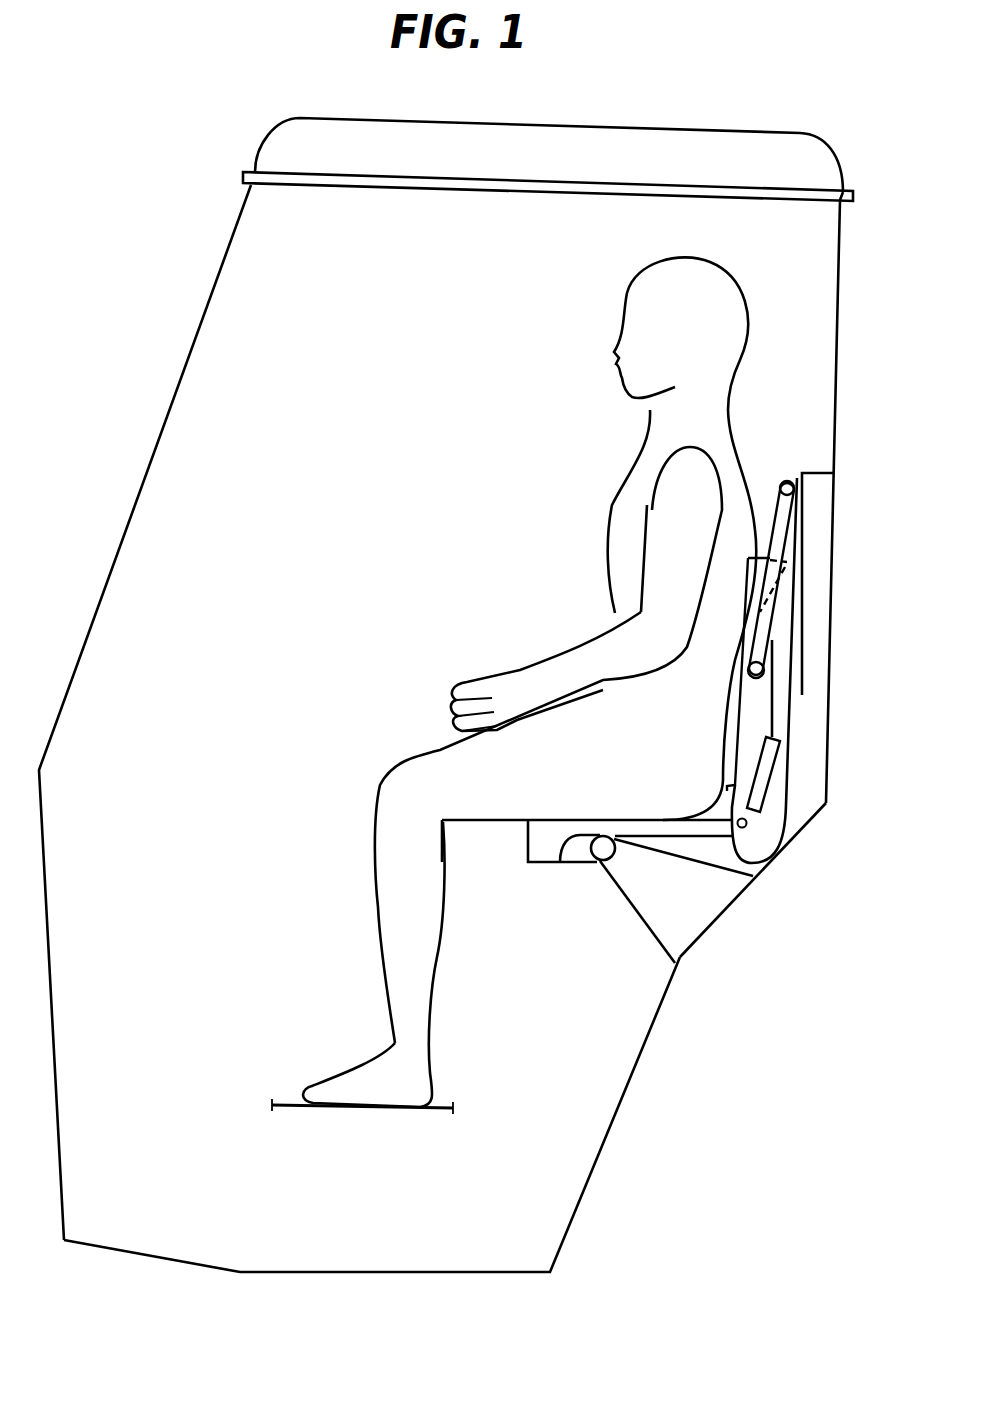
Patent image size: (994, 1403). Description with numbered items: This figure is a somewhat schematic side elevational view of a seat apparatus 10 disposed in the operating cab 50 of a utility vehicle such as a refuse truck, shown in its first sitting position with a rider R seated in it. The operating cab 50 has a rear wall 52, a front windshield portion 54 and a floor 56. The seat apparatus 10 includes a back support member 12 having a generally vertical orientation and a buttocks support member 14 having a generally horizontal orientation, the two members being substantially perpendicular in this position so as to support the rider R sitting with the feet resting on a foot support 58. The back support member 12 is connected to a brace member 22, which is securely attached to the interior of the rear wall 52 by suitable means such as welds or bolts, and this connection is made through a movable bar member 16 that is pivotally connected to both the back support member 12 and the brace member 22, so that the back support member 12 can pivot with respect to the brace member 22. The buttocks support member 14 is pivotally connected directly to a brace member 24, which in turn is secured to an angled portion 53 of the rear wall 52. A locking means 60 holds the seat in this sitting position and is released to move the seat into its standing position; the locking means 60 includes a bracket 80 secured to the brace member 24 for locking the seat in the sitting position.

The seat apparatus 10 is at (794, 693).
The back support member 12 is at (759, 538).
The buttocks support member 14 is at (536, 874).
The bar member 16 is at (783, 527).
The brace member 22 is at (817, 595).
The brace member 24 is at (673, 933).
The operating cab 50 is at (461, 695).
The rear wall 52 is at (840, 310).
The angled portion 53 is at (725, 915).
The front windshield portion 54 is at (188, 355).
The floor 56 is at (248, 1262).
The foot support 58 is at (433, 1122).
The locking means 60 is at (788, 775).
The bracket 80 is at (758, 873).
The rider R is at (575, 463).